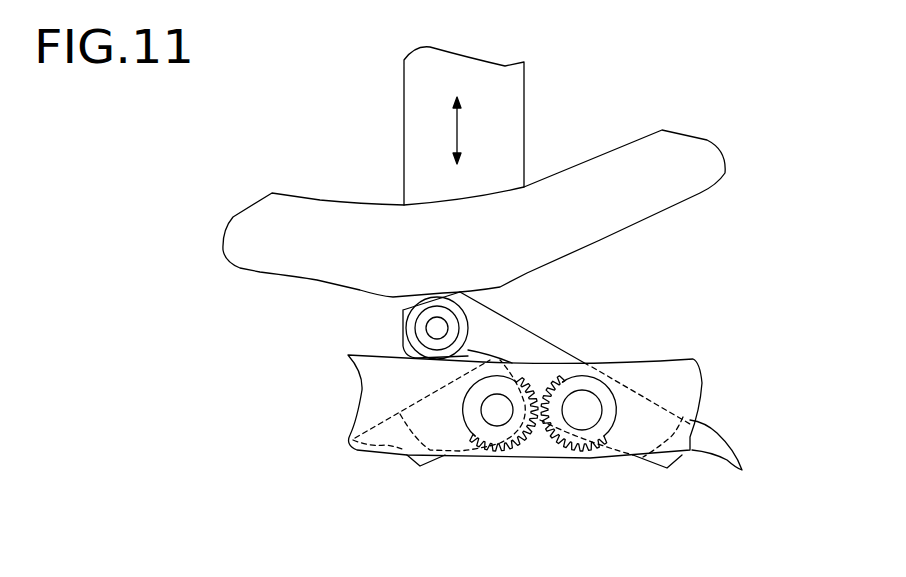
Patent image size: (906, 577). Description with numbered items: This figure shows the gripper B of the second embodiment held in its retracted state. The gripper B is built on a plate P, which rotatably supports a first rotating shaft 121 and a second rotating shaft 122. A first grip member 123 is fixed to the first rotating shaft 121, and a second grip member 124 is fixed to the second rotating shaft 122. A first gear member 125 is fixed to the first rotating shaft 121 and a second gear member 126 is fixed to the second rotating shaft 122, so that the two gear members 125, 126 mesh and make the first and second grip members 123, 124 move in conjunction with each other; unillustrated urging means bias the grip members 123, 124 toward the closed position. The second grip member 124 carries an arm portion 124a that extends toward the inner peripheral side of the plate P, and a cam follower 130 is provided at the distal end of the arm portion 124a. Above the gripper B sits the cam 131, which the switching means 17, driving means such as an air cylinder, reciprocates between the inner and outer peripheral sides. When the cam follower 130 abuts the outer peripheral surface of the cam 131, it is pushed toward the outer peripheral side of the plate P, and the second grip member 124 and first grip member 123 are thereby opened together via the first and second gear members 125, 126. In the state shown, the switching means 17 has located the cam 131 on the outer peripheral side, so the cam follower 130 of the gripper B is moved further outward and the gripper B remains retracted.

The switching means 17 is at (525, 92).
The cam 131 is at (707, 139).
The cam follower 130 is at (402, 330).
The arm portion 124a is at (515, 337).
The gripper B is at (568, 345).
The plate P is at (678, 358).
The first rotating shaft 121 is at (495, 415).
The first gear member 125 is at (510, 455).
The second rotating shaft 122 is at (578, 418).
The second gear member 126 is at (593, 452).
The first grip member 123 is at (418, 465).
The second grip member 124 is at (742, 472).